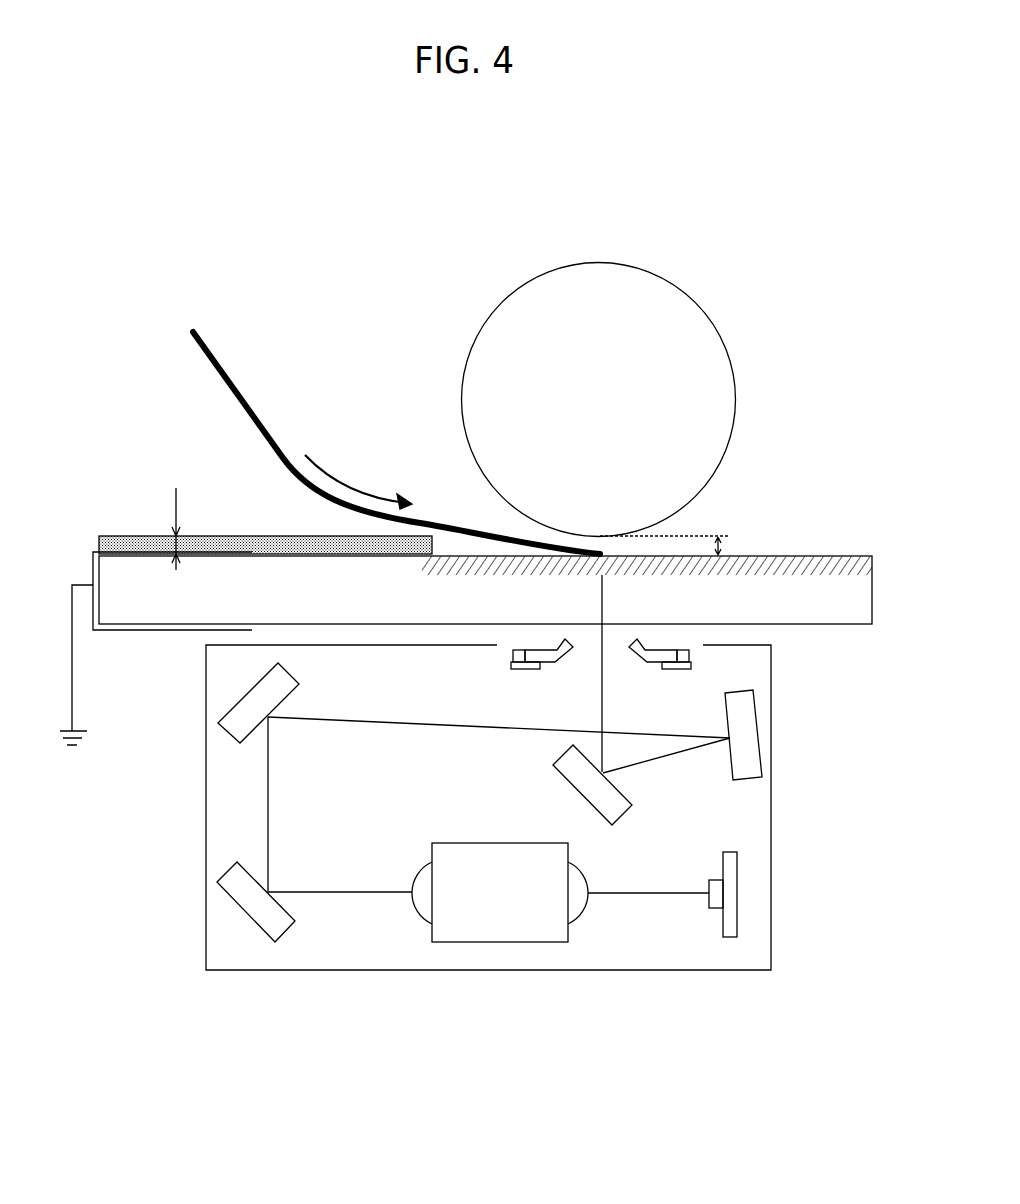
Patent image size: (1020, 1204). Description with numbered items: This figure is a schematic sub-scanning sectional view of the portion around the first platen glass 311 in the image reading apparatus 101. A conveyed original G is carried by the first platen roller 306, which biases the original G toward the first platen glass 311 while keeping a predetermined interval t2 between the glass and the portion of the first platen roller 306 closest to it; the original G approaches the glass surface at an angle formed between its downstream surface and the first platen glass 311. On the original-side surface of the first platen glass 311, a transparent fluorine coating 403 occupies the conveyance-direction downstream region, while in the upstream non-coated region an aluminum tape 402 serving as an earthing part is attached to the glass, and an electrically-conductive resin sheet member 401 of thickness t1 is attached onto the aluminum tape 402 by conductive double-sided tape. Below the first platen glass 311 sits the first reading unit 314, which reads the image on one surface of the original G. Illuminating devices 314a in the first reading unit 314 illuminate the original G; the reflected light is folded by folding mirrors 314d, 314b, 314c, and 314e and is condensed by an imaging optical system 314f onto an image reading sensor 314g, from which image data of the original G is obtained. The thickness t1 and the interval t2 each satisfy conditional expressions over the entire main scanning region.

The image reading apparatus 101 is at (705, 268).
The first platen roller 306 is at (520, 310).
The first platen glass 311 is at (808, 612).
The first reading unit 314 is at (206, 840).
The illuminating devices 314a is at (550, 664).
The folding mirror 314b is at (583, 785).
The folding mirror 314c is at (742, 758).
The folding mirror 314d is at (283, 687).
The folding mirror 314e is at (278, 932).
The imaging optical system 314f is at (500, 942).
The image reading sensor 314g is at (730, 933).
The electrically-conductive resin sheet member 401 is at (143, 540).
The aluminum tape 402 is at (110, 630).
The transparent fluorine coating 403 is at (810, 556).
The original G is at (232, 387).
The thickness of the electrically-conductive resin sheet member t1 is at (184, 529).
The interval between the first platen glass and the first platen roller t2 is at (725, 547).